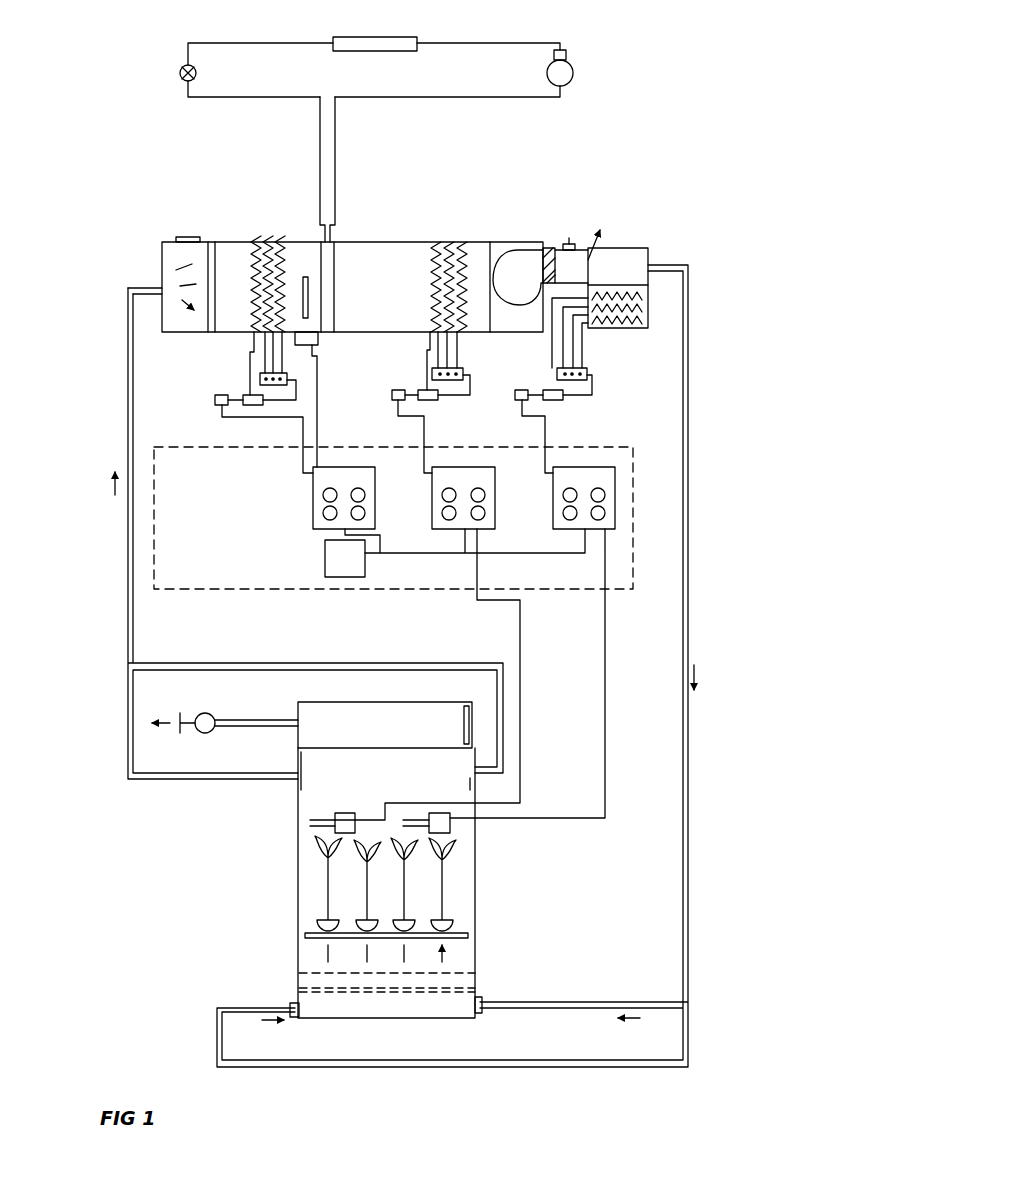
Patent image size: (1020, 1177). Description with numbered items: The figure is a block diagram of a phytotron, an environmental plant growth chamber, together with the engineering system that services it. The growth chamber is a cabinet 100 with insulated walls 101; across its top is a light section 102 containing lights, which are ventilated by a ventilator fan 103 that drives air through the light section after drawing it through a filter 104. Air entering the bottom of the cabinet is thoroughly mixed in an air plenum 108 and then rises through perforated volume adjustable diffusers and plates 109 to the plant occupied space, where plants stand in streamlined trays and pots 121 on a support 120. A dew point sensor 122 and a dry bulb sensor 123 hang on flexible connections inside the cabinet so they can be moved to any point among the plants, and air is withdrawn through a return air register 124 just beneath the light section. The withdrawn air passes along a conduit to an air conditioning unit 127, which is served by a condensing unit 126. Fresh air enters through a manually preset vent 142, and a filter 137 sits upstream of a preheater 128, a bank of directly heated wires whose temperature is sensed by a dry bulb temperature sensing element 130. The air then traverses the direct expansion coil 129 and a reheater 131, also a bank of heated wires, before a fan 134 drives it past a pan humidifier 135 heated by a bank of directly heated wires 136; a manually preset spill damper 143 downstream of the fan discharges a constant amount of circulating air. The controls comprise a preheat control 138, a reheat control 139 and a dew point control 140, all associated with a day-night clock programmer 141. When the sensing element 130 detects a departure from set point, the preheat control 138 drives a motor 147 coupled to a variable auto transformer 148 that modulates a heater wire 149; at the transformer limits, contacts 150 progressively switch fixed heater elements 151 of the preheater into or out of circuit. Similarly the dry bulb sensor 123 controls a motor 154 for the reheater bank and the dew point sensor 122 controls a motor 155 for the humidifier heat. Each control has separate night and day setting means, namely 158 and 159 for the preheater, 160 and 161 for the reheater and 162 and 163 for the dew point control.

The cabinet 100 is at (340, 865).
The insulated walls 101 is at (298, 897).
The light section 102 is at (332, 716).
The ventilator fan 103 is at (217, 704).
The filter 104 is at (464, 723).
The air plenum 108 is at (410, 1016).
The perforated volume adjustable diffusers and plates 109 is at (300, 990).
The plant tray / support 120 is at (468, 935).
The trays and pots 121 is at (398, 920).
The dew point sensor 122 is at (418, 824).
The dry bulb sensor 123 is at (312, 822).
The return air register 124 is at (299, 790).
The condensing unit 126 is at (548, 66).
The air conditioning unit 127 is at (180, 340).
The preheater 128 is at (238, 336).
The direct expansion coil 129 is at (336, 252).
The dry bulb temperature sensing element 130 is at (303, 283).
The reheater 131 is at (466, 242).
The fan 134 is at (518, 300).
The pan humidifier 135 is at (628, 258).
The bank of directly heated wires 136 is at (636, 328).
The filter 137 is at (208, 322).
The preheat control 138 is at (311, 475).
The reheat control 139 is at (438, 475).
The dew point control 140 is at (562, 474).
The day-night clock programmer 141 is at (333, 557).
The manually preset vent 142 is at (180, 237).
The spill damper 143 is at (566, 245).
The motor 147 is at (215, 398).
The variable auto transformer 148 is at (262, 406).
The heater wire 149 is at (250, 283).
The contacts 150 is at (290, 379).
The fixed heater elements 151 is at (256, 234).
The motor 154 is at (392, 395).
The motor 155 is at (515, 395).
The night setting means 158 is at (322, 495).
The day setting means 159 is at (323, 514).
The night setting means 160 is at (442, 495).
The day setting means 161 is at (442, 514).
The night setting means 162 is at (563, 495).
The day setting means 163 is at (563, 514).